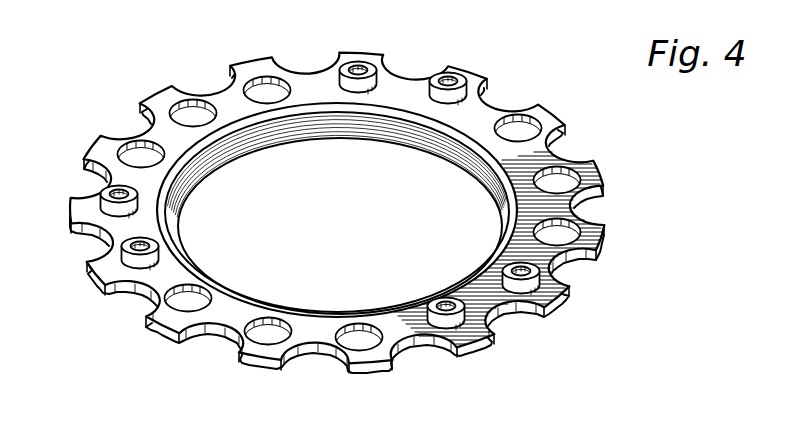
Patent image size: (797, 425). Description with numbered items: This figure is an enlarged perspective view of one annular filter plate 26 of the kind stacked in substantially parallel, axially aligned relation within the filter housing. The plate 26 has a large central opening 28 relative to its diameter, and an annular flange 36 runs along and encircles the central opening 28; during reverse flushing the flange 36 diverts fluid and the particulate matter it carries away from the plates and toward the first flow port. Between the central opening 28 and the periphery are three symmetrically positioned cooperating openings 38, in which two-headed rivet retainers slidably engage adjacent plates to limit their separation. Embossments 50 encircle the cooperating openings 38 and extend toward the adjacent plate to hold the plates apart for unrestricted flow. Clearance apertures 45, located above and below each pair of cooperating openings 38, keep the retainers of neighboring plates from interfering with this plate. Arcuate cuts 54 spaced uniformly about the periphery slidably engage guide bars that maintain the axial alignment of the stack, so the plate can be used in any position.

The annular filter plate 26 is at (597, 175).
The central opening 28 is at (525, 343).
The annular flange 36 is at (316, 122).
The cooperating opening 38 is at (357, 62).
The clearance aperture 45 is at (527, 133).
The embossment 50 is at (377, 78).
The arcuate cut 54 is at (557, 160).